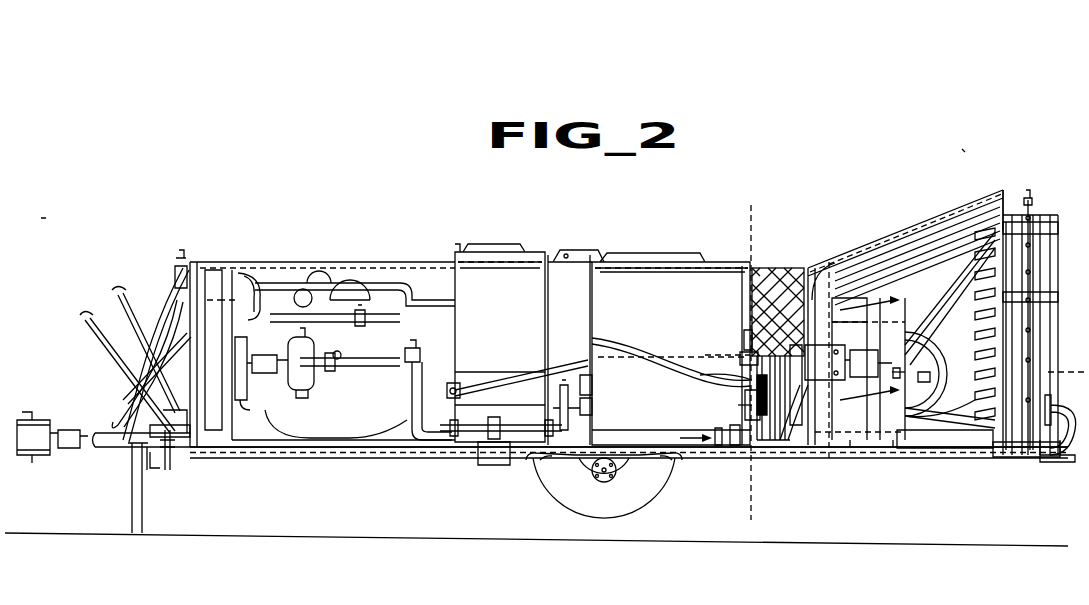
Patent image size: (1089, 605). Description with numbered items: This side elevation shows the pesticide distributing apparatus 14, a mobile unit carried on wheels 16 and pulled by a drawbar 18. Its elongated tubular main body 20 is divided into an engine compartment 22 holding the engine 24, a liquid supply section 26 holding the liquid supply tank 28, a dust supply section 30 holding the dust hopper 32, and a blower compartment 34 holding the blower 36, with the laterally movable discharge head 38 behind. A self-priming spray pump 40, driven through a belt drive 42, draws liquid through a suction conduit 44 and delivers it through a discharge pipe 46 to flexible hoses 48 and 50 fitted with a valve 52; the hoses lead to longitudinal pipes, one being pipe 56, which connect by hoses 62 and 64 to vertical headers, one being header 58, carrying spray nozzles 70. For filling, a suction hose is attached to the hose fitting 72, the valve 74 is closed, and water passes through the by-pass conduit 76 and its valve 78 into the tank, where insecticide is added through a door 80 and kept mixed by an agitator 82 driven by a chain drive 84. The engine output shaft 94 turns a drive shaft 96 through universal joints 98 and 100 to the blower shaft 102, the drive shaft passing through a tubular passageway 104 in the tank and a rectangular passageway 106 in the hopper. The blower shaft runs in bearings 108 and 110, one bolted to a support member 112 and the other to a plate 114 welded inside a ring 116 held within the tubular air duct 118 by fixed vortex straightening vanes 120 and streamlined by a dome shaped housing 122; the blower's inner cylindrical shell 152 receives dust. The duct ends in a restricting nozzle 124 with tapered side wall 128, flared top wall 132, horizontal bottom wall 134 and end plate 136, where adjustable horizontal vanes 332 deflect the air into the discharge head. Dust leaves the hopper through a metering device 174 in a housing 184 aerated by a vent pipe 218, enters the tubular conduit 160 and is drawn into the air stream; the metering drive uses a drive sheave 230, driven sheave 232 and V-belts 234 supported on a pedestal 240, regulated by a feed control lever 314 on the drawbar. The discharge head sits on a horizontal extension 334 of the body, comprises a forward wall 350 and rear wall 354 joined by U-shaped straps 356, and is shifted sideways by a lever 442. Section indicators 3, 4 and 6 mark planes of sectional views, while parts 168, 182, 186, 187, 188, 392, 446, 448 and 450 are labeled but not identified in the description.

The pesticide distributing apparatus 14 is at (985, 165).
The wheels 16 is at (588, 531).
The drawbar 18 is at (42, 420).
The main body 20 is at (394, 262).
The engine compartment 22 is at (285, 262).
The engine 24 is at (324, 401).
The liquid supply section 26 is at (516, 256).
The liquid supply tank 28 is at (488, 326).
The dust supply section 30 is at (656, 262).
The dust hopper 32 is at (638, 305).
The blower compartment 34 is at (858, 262).
The blower 36 is at (824, 305).
The discharge head 38 is at (1050, 212).
The self-priming spray pump 40 is at (300, 380).
The belt drive 42 is at (243, 380).
The suction conduit 44 is at (405, 386).
The discharge pipe 46 is at (197, 258).
The flexible hose 48 is at (160, 345).
The flexible hose 50 is at (175, 298).
The valve 52 is at (180, 285).
The longitudinally extending pipe 56 is at (290, 460).
The vertically extending header 58 is at (1030, 262).
The hose 62 is at (1058, 415).
The hose 64 is at (1072, 462).
The spray nozzles 70 is at (1028, 278).
The hose fitting 72 is at (342, 355).
The valve 74 is at (395, 357).
The by-pass conduit 76 is at (422, 286).
The valve 78 is at (355, 315).
The door 80 is at (497, 272).
The agitator 82 is at (485, 447).
The chain drive 84 is at (575, 420).
The output shaft 94 is at (458, 385).
The drive shaft 96 is at (558, 380).
The universal joint 98 is at (498, 385).
The universal joint 100 is at (745, 355).
The blower shaft 102 is at (893, 372).
The tubular passageway 104 is at (497, 406).
The tubular passageway 106 is at (648, 360).
The bearing 108 is at (796, 360).
The bearing 110 is at (900, 380).
The support member 112 is at (780, 445).
The plate 114 is at (930, 395).
The ring 116 is at (912, 310).
The air duct 118 is at (893, 448).
The vanes 120 is at (895, 437).
The dome shaped housing 122 is at (932, 378).
The nozzle 124 is at (968, 244).
The side wall 128 is at (944, 324).
The top wall 132 is at (935, 265).
The bottom wall 134 is at (938, 440).
The end plate 136 is at (1004, 218).
The inner cylindrical shell 152 is at (848, 368).
The tubular conduit 160 is at (755, 455).
The support 168 is at (850, 448).
The metering device 174 is at (746, 410).
The hopper wall 182 is at (650, 265).
The housing 184 is at (705, 425).
The hopper end wall 186 is at (738, 288).
The bearing 187 is at (588, 395).
The partition 188 is at (588, 315).
The vent pipe 218 is at (745, 340).
The drive sheave 230 is at (735, 386).
The driven sheave 232 is at (755, 395).
The V-belts 234 is at (765, 440).
The pedestal 240 is at (612, 444).
The feed control lever 314 is at (115, 300).
The vanes 332 is at (980, 415).
The horizontal extension 334 is at (1027, 458).
The forward wall 350 is at (1015, 225).
The rear wall 354 is at (1040, 240).
The straps 356 is at (1040, 300).
The bracket 392 is at (145, 453).
The lever 442 is at (88, 338).
The bracket 446 is at (150, 465).
The link 448 is at (143, 373).
The support leg 450 is at (175, 455).
The section line 3- 3 is at (712, 320).
The section line 4- 4 is at (878, 272).
The section line 6- 6 is at (795, 213).